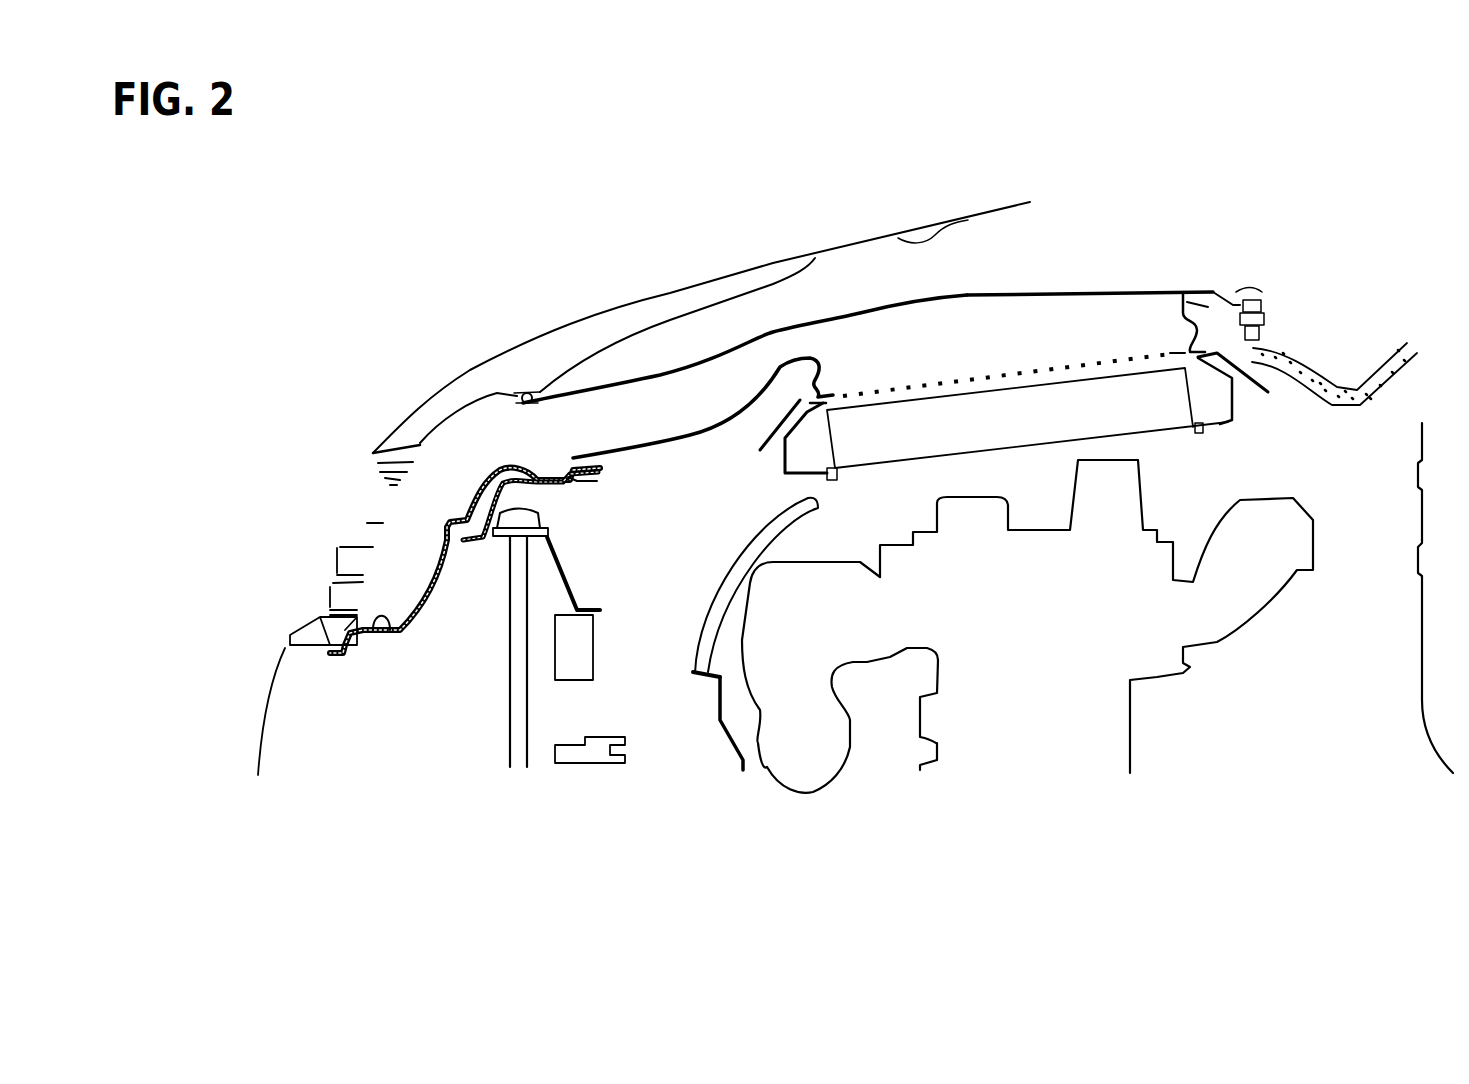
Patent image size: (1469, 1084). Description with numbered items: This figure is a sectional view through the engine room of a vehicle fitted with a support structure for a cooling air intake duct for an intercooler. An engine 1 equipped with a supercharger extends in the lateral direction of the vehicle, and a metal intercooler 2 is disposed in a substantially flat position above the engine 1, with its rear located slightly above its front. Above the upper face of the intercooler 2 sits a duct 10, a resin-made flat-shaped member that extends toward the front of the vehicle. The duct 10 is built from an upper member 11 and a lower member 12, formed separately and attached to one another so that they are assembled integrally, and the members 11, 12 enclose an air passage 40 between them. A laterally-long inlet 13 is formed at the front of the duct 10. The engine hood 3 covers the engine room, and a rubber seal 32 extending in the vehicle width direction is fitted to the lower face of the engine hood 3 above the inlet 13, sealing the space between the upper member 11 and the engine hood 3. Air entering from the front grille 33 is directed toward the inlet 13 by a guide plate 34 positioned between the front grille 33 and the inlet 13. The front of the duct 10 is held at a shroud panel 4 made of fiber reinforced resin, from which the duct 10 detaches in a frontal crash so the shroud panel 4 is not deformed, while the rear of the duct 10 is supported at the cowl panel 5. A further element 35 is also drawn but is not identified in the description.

The engine 1 is at (1217, 642).
The intercooler 2 is at (1150, 430).
The engine hood 3 is at (660, 297).
The shroud panel 4 is at (568, 482).
The cowl panel 5 is at (1282, 345).
The duct 10 is at (1110, 290).
The upper member 11 is at (862, 312).
The lower member 12 is at (685, 443).
The inlet 13 is at (497, 413).
The rubber seal 32 is at (540, 395).
The front grille 33 is at (340, 563).
The guide plate 34 is at (382, 633).
The support post 35 is at (507, 723).
The air passage 40 is at (688, 431).